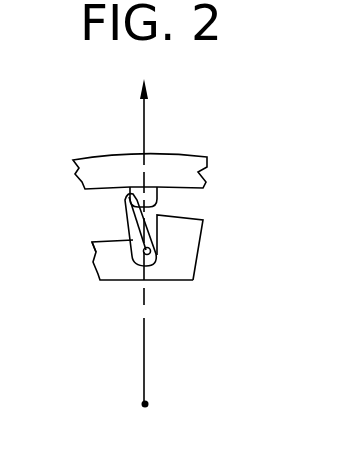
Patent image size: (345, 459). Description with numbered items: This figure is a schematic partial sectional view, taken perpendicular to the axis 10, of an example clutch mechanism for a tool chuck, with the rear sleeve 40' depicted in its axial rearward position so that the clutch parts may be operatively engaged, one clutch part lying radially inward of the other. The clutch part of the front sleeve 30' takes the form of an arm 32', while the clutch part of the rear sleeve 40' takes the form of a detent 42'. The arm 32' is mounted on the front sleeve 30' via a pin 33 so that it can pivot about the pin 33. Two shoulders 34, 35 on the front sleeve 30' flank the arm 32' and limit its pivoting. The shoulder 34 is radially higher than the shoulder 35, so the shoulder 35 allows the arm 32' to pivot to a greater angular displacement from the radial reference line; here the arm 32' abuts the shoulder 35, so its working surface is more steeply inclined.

The axis 10 is at (150, 403).
The front sleeve 30' is at (130, 283).
The arm 32' is at (92, 230).
The pin 33 is at (157, 255).
The shoulder 34 is at (197, 218).
The shoulder 35 is at (93, 240).
The rear sleeve 40' is at (167, 148).
The detent 42' is at (201, 189).